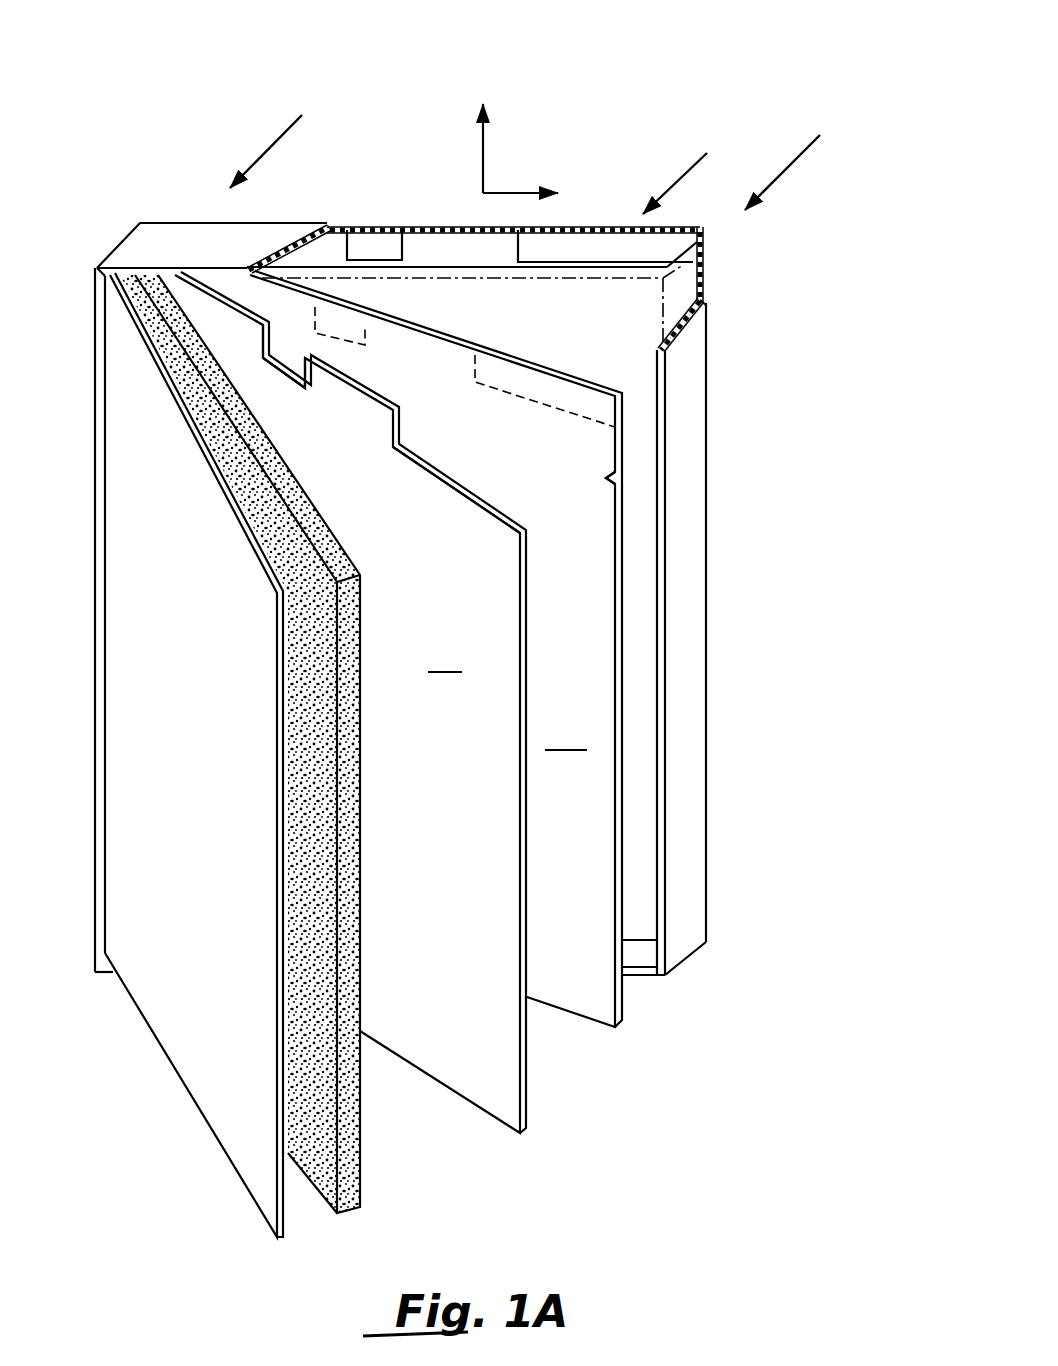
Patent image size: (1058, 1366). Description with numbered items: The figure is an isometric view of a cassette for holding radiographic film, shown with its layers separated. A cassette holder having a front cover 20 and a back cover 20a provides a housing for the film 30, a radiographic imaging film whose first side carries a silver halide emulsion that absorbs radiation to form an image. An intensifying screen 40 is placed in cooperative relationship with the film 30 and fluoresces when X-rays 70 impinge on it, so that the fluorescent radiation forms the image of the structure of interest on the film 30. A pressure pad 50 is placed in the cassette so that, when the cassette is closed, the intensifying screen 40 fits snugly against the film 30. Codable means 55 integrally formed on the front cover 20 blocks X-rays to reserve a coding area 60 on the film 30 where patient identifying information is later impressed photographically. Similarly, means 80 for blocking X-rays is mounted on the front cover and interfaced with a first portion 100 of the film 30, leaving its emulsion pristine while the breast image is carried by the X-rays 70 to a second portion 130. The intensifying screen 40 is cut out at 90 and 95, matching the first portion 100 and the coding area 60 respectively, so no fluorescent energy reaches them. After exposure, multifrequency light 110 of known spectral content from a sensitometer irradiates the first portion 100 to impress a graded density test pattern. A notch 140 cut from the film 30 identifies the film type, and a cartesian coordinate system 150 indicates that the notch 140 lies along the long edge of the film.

The front cover 20 is at (693, 795).
The back cover 20a is at (188, 1010).
The film 30 is at (592, 588).
The intensifying screen 40 is at (350, 702).
The pressure pad 50 is at (360, 1152).
The codable means 55 is at (378, 245).
The coding area 60 is at (360, 336).
The X-rays 70 is at (310, 72).
The means for blocking X-rays 80 is at (660, 248).
The cutout 90 is at (442, 473).
The cutout 95 is at (285, 382).
The first portion 100 is at (540, 395).
The light 110 is at (722, 103).
The second portion 130 is at (564, 736).
The notch 140 is at (620, 478).
The cartesian coordinate system 150 is at (510, 170).